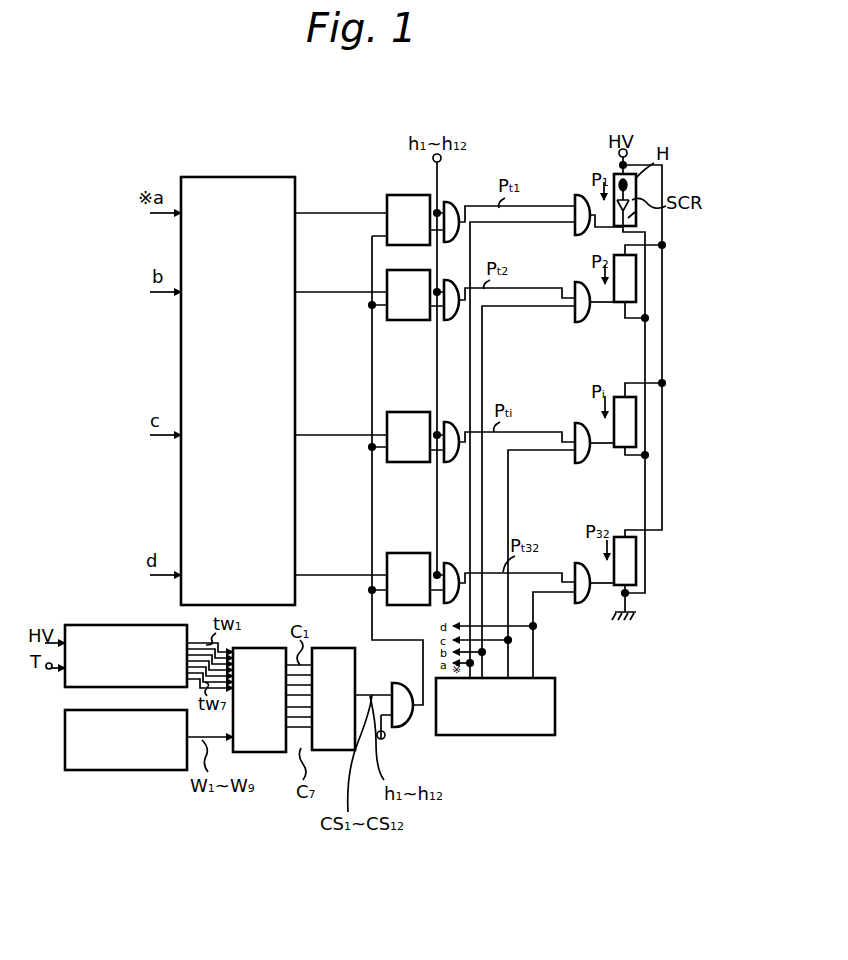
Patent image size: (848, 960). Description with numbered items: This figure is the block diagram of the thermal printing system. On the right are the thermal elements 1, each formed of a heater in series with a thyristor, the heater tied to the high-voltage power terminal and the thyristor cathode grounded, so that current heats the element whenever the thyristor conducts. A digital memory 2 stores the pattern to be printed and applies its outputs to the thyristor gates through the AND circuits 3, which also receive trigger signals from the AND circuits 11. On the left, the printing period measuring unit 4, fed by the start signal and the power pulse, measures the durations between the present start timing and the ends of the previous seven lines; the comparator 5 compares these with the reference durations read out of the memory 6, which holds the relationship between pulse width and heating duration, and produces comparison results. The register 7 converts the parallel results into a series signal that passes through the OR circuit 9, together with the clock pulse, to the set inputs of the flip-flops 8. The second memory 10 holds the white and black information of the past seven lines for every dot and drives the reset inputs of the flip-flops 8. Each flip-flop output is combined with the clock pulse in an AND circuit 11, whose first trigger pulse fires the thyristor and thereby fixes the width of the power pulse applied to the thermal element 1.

The thermal element 1 is at (636, 379).
The digital memory 2 is at (528, 736).
The AND circuit 3 is at (584, 405).
The printing period measuring unit 4 is at (125, 625).
The comparator 5 is at (280, 752).
The memory 6 is at (129, 770).
The register 7 is at (341, 750).
The flip-flop 8 is at (402, 399).
The OR circuit 9 is at (405, 728).
The second memory 10 is at (181, 372).
The AND circuit 11 is at (459, 387).